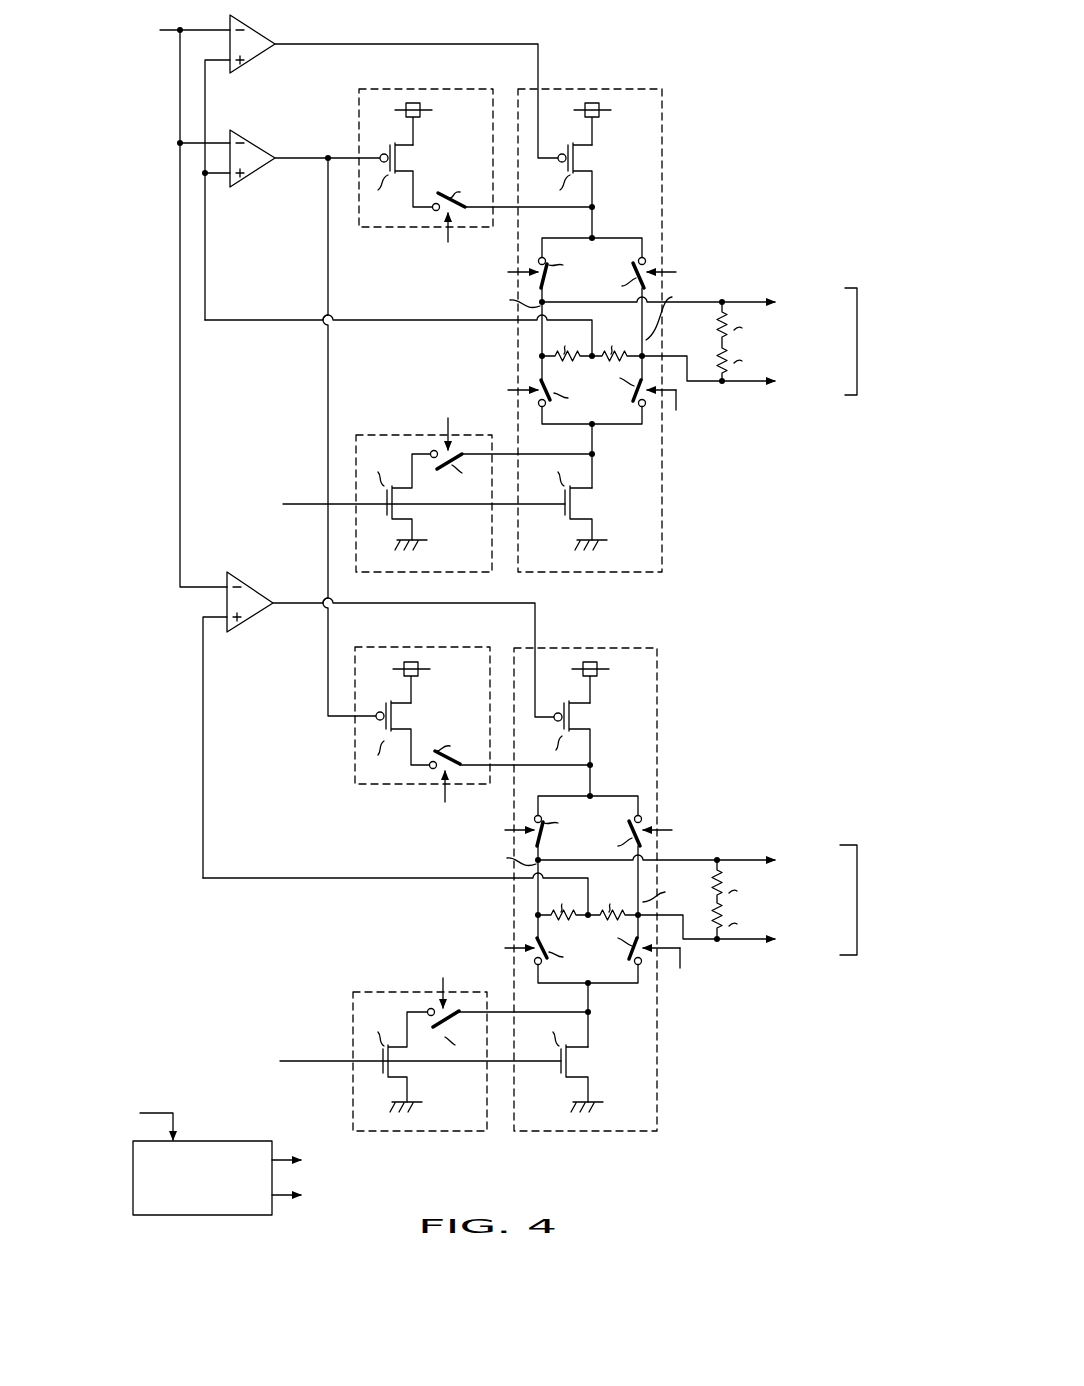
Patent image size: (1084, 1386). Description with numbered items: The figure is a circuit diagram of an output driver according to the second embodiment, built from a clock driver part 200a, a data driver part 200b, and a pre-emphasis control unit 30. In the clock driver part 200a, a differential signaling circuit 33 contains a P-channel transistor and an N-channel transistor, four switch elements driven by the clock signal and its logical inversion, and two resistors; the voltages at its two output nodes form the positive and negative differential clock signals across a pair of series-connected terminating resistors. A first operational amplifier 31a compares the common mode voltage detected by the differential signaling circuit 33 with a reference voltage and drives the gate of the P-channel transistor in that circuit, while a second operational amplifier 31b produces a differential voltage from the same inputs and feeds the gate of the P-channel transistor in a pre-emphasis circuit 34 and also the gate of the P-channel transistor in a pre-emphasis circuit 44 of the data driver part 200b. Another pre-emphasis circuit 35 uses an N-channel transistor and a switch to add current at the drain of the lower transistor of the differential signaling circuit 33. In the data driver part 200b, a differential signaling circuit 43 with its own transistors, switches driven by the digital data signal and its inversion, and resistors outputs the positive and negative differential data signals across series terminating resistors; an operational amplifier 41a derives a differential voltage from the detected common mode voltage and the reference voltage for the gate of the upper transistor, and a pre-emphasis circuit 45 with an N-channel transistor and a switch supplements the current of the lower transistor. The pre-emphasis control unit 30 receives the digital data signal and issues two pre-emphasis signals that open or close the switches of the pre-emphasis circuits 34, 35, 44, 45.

The operational amplifier 31a is at (255, 38).
The operational amplifier 31b is at (255, 145).
The operational amplifier 41a is at (250, 586).
The differential signaling circuit 33 is at (612, 89).
The pre-emphasis circuit 34 is at (440, 89).
The pre-emphasis circuit 35 is at (392, 435).
The differential signaling circuit 43 is at (612, 648).
The pre-emphasis circuit 44 is at (458, 647).
The pre-emphasis circuit 45 is at (390, 992).
The pre-emphasis control unit 30 is at (255, 1141).
The clock driver part 200a is at (725, 571).
The data driver part 200b is at (727, 652).